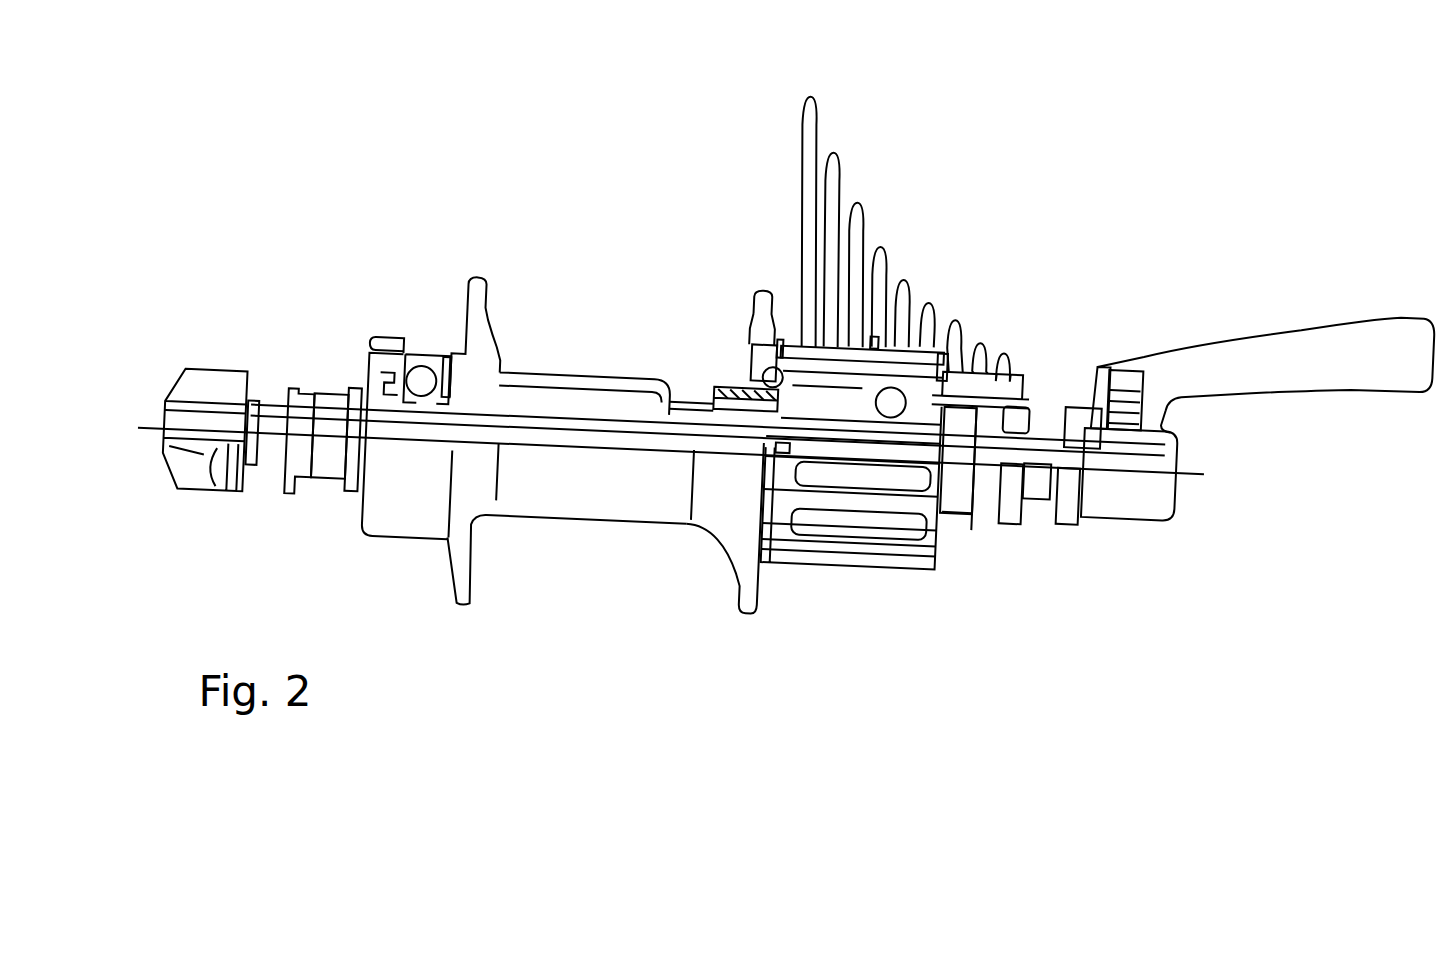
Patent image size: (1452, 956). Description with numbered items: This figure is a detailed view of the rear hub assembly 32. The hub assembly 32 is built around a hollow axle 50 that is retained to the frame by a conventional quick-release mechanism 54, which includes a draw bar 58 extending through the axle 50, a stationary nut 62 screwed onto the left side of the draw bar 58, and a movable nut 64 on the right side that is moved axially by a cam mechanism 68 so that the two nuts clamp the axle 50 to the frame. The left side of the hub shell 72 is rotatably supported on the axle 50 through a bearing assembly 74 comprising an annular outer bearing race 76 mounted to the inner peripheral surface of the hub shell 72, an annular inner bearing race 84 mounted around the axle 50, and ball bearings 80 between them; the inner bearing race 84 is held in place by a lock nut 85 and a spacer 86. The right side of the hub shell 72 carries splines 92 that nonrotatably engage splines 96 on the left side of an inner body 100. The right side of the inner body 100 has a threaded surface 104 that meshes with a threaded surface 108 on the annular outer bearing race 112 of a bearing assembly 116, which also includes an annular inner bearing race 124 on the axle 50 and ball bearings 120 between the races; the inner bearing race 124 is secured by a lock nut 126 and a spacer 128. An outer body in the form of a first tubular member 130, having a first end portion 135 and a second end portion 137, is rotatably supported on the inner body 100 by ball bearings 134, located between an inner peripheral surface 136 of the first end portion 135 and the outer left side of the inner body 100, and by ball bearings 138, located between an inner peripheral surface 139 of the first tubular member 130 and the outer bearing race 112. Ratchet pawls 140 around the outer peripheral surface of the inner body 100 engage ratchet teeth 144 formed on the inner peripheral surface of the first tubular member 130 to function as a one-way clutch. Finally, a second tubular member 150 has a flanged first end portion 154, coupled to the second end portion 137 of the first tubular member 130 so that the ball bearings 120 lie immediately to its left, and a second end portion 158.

The hub assembly 32 is at (284, 151).
The hollow axle 50 is at (272, 394).
The quick-release mechanism 54 is at (156, 346).
The draw bar 58 is at (247, 395).
The stationary nut 62 is at (180, 466).
The movable nut 64 is at (1143, 460).
The cam mechanism 68 is at (1298, 294).
The hub shell 72 is at (526, 356).
The bearing assembly 74 is at (463, 376).
The annular outer bearing race 76 is at (429, 354).
The ball bearings 80 is at (392, 344).
The annular inner bearing race 84 is at (352, 470).
The lock nut 85 is at (296, 484).
The spacer 86 is at (330, 472).
The splines 92 is at (718, 362).
The splines 96 is at (735, 362).
The inner body 100 is at (834, 362).
The threaded surface 104 is at (848, 565).
The threaded surface 108 is at (848, 543).
The annular outer bearing race 112 is at (861, 526).
The bearing assembly 116 is at (850, 501).
The ball bearings 120 is at (858, 552).
The annular inner bearing race 124 is at (848, 534).
The lock nut 126 is at (1015, 470).
The spacer 128 is at (987, 467).
The first tubular member 130 is at (784, 317).
The ball bearings 134 is at (748, 318).
The first end portion 135 is at (752, 318).
The inner peripheral surface 136 is at (776, 312).
The second end portion 137 is at (897, 334).
The ball bearings 138 is at (717, 562).
The inner peripheral surface 139 is at (868, 305).
The ratchet pawls 140 is at (839, 380).
The ratchet teeth 144 is at (728, 532).
The second tubular member 150 is at (975, 440).
The flanged first end portion 154 is at (936, 446).
The second end portion 158 is at (1006, 363).